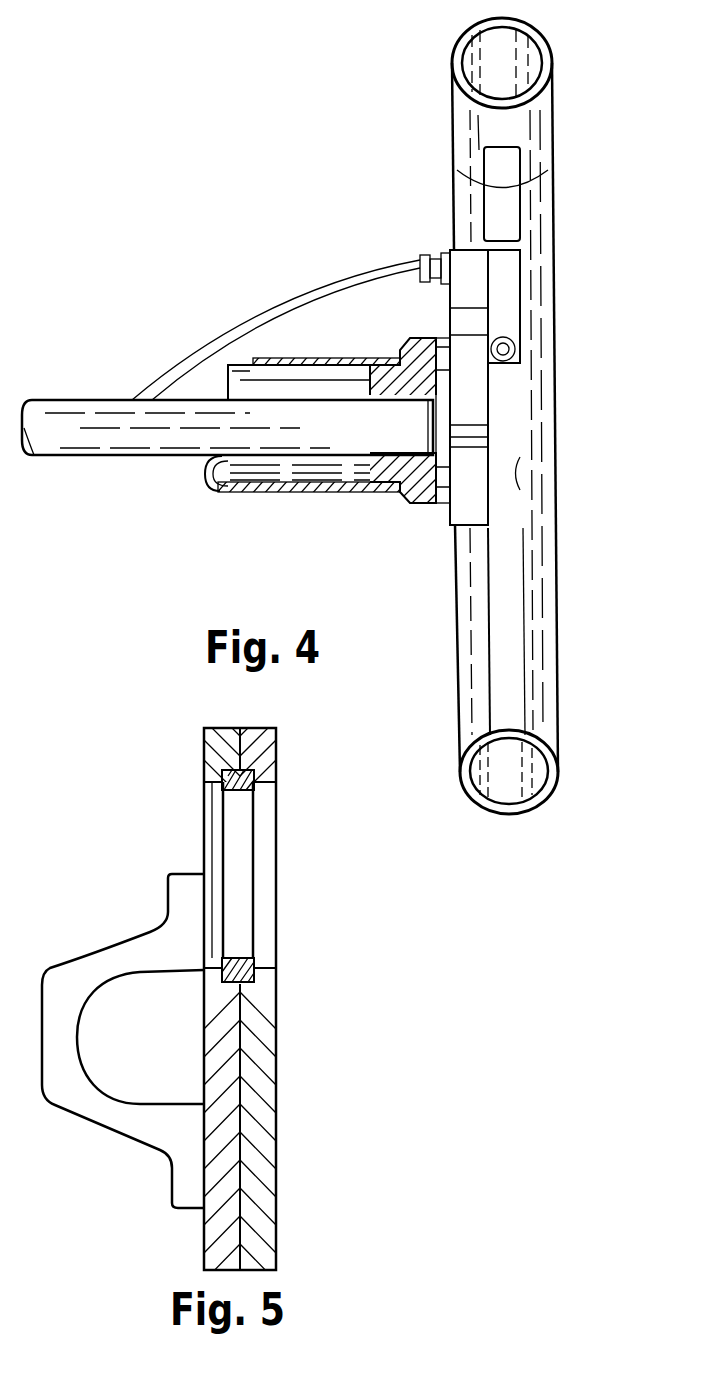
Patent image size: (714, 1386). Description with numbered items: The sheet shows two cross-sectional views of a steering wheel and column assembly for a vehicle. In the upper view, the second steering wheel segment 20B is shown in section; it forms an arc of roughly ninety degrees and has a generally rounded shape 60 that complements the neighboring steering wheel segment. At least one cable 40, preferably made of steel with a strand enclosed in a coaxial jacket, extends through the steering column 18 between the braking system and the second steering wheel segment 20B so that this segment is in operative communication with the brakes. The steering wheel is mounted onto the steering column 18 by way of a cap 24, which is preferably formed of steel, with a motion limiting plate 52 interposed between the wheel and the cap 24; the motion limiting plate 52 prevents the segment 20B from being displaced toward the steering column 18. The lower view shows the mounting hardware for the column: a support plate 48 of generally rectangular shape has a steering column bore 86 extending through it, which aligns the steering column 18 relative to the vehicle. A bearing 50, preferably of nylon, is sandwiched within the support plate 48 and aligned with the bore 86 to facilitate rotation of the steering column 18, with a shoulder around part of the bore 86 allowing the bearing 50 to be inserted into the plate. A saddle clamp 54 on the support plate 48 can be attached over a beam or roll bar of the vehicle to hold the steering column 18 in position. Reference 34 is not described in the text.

In FIG. 4, the handlebar tube 34 is at (552, 77).
In FIG. 4, the second steering wheel segment 20B is at (520, 238).
In FIG. 4, the cable 40 is at (230, 333).
In FIG. 4, the steering column 18 is at (253, 494).
In FIG. 4, the cap 24 is at (440, 507).
In FIG. 4, the motion limiting plate 52 is at (457, 523).
In FIG. 4, the rounded shape 60 is at (547, 768).
In FIG. 5, the steering column bore 86 is at (212, 833).
In FIG. 5, the bearing 50 is at (253, 960).
In FIG. 5, the saddle clamp 54 is at (93, 1110).
In FIG. 5, the support plate 48 is at (222, 1235).